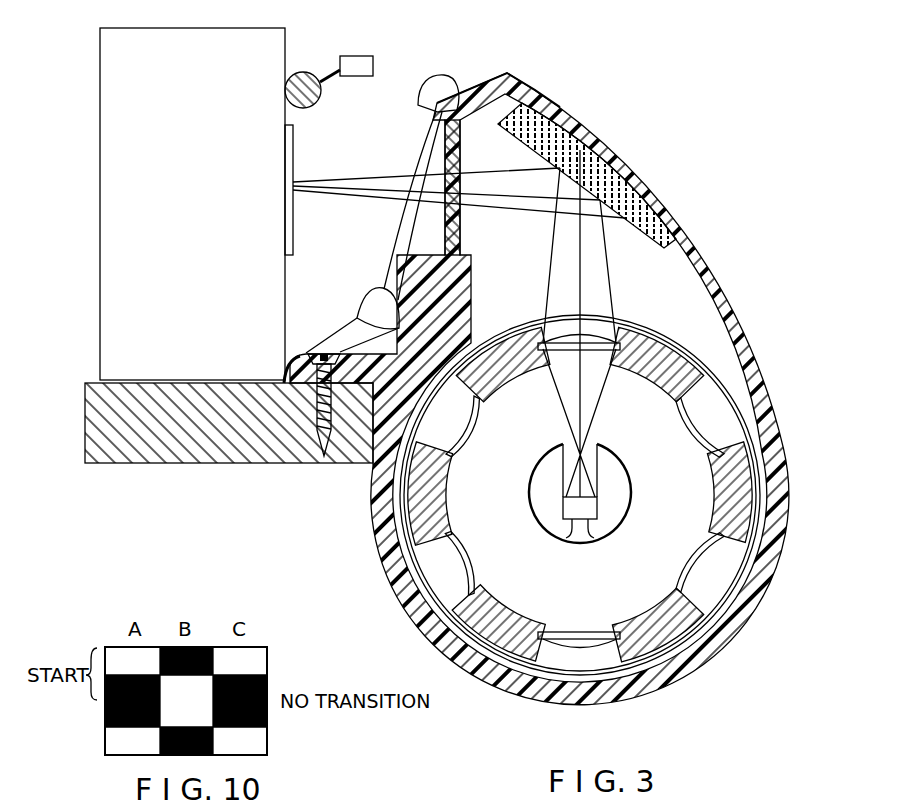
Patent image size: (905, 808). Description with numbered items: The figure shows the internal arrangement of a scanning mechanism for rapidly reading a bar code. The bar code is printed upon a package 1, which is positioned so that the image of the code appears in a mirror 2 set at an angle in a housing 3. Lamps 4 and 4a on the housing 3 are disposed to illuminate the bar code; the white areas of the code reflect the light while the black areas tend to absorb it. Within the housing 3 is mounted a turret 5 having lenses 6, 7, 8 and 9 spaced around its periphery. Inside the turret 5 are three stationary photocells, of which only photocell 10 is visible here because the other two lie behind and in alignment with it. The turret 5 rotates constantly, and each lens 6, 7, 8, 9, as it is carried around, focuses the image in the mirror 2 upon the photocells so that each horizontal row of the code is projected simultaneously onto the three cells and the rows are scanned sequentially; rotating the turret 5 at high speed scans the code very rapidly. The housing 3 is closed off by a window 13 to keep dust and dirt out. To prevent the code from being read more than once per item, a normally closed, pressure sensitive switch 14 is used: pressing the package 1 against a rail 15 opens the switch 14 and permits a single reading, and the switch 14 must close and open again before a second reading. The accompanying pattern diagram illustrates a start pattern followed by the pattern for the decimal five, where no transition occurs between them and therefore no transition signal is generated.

In FIG. 3, the package 1 is at (100, 200).
In FIG. 3, the mirror 2 is at (514, 141).
In FIG. 3, the housing 3 is at (527, 82).
In FIG. 3, the lamp 4 is at (357, 312).
In FIG. 3, the lamp 4a is at (431, 73).
In FIG. 3, the turret 5 is at (510, 332).
In FIG. 10, the turret 5 is at (97, 703).
In FIG. 3, the lens 6 is at (596, 340).
In FIG. 3, the lens 7 is at (703, 407).
In FIG. 3, the lens 8 is at (720, 575).
In FIG. 3, the lens 9 is at (580, 650).
In FIG. 3, the photocell 10 is at (598, 507).
In FIG. 3, the window 13 is at (490, 75).
In FIG. 3, the switch 14 is at (362, 56).
In FIG. 3, the rail 15 is at (309, 73).